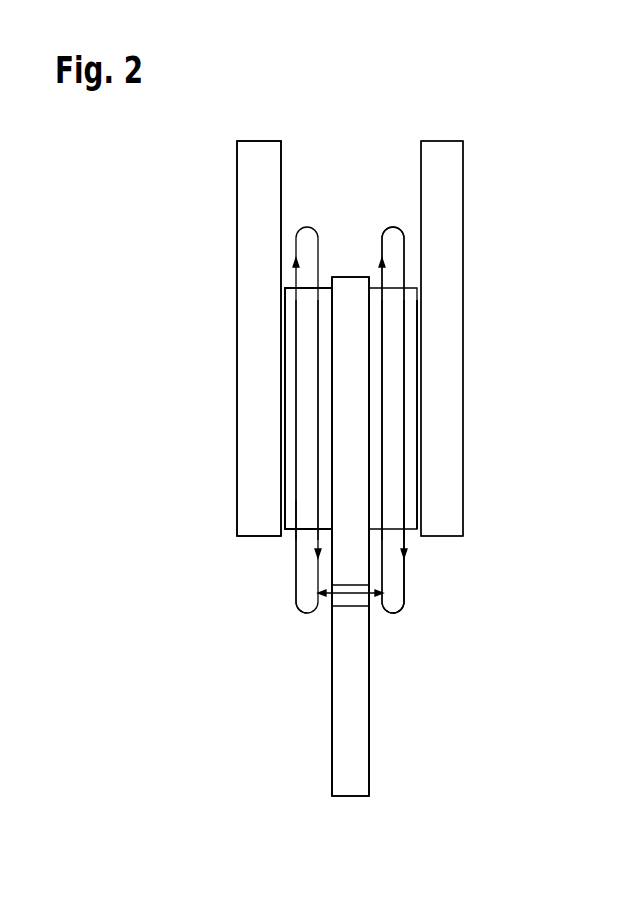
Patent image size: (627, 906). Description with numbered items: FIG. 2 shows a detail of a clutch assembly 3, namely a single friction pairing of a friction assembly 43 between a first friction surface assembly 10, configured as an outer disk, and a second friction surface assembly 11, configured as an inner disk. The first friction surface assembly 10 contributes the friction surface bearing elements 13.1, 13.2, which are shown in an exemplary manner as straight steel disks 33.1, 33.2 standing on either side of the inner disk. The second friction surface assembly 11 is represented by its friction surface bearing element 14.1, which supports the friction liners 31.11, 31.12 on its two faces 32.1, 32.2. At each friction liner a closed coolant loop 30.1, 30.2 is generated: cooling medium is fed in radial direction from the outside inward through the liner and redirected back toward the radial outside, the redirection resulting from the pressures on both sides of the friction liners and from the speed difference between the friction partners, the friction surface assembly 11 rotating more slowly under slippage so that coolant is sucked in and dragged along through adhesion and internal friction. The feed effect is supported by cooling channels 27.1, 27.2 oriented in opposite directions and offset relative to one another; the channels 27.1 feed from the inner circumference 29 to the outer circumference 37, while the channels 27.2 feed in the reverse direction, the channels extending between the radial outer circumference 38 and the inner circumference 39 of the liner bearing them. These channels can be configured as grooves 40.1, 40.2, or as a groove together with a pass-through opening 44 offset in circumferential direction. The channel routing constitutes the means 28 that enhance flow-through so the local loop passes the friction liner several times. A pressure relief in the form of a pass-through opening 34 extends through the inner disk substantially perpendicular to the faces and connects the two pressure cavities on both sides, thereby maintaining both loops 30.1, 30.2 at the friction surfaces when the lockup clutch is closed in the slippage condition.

The clutch assembly 3 is at (359, 117).
The first friction surface assembly 10 is at (250, 178).
The second friction surface assembly 11 is at (331, 752).
The friction surface bearing element 13.1 is at (250, 344).
The friction surface bearing element 13.2 is at (450, 343).
The friction surface bearing element 14.1 is at (352, 770).
The cooling channel 27.1 is at (300, 420).
The cooling channel 27.2 is at (298, 505).
The means for generating the local cooling loop 28 is at (292, 510).
The inner circumference 29 is at (286, 535).
The coolant loop 30.1 is at (306, 227).
The coolant loop 30.2 is at (389, 227).
The friction liner 31.11 is at (290, 535).
The friction liner 31.12 is at (407, 522).
The face 32.1 is at (330, 690).
The face 32.2 is at (372, 690).
The steel disk 33.1 is at (250, 302).
The steel disk 33.2 is at (450, 307).
The pass-through opening 34 is at (345, 600).
The outer circumference 37 is at (288, 288).
The radial outer circumference 38 is at (418, 288).
The inner circumference 39 is at (286, 535).
The groove 40.1 is at (300, 455).
The groove 40.2 is at (300, 380).
The friction assembly 43 is at (386, 167).
The pass-through opening 44 is at (294, 507).